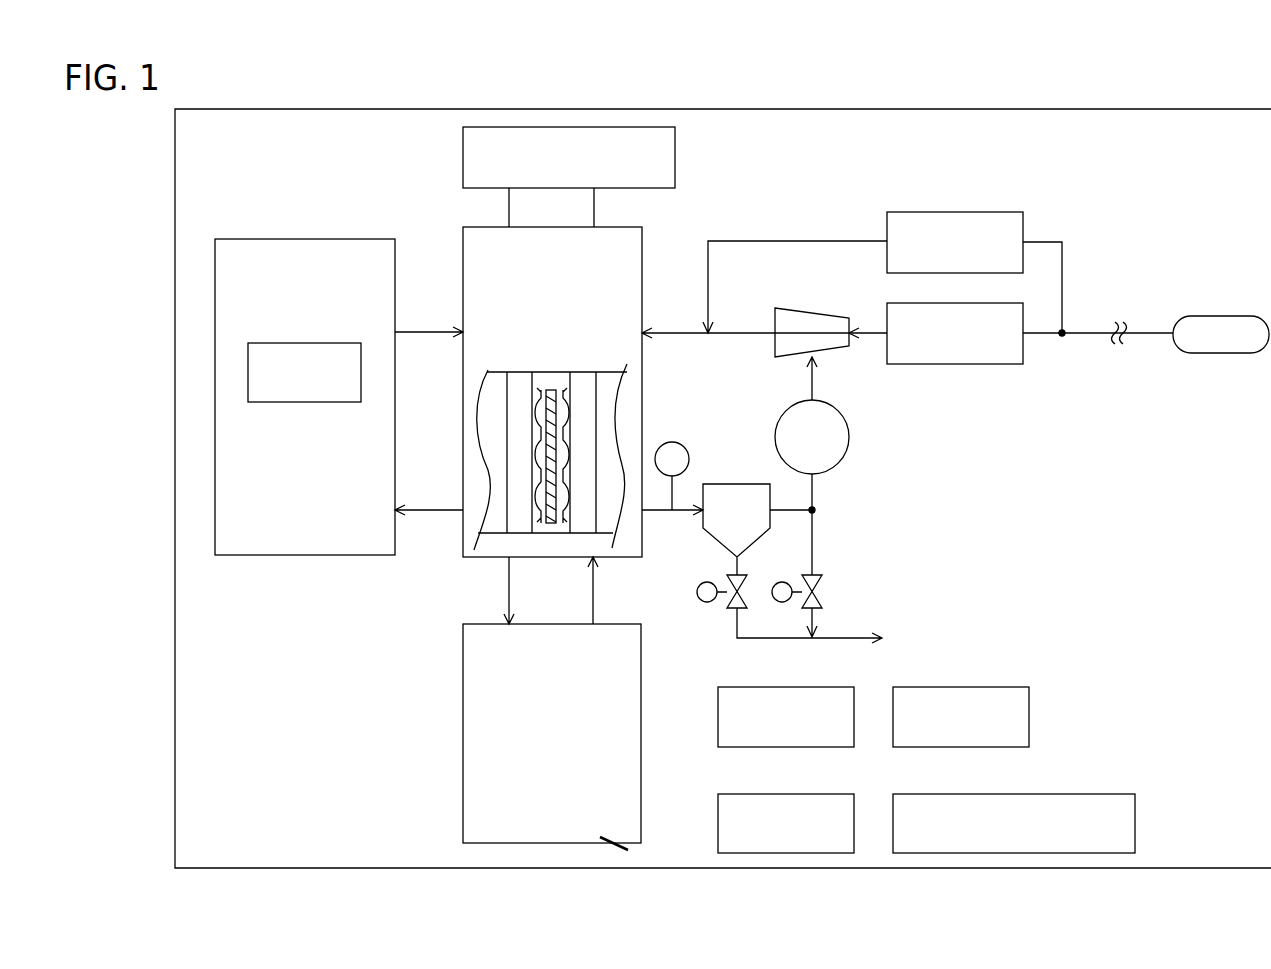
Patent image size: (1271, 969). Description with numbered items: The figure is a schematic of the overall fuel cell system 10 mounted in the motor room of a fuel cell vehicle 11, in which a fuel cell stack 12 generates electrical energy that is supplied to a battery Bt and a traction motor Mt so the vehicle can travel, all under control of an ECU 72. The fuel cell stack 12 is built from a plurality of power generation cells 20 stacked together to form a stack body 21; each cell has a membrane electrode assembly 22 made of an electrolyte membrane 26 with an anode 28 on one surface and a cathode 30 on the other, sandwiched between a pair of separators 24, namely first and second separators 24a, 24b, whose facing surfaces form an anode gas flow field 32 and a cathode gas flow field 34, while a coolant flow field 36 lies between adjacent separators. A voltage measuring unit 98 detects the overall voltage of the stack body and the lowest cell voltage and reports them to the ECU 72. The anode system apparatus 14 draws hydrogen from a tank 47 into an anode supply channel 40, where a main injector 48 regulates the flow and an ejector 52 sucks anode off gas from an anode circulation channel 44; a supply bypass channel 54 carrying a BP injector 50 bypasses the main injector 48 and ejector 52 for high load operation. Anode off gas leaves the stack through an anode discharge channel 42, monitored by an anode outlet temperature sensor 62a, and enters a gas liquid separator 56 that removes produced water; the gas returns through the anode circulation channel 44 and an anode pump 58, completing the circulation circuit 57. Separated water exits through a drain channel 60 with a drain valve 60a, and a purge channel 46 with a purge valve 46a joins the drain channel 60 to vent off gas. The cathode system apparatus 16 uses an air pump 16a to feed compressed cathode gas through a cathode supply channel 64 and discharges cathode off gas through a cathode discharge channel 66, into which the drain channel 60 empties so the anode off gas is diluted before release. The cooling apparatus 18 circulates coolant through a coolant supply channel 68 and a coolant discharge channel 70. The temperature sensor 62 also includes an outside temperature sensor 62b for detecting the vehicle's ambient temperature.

The fuel cell system 10 is at (232, 206).
The fuel cell vehicle 11 is at (328, 106).
The fuel cell stack 12 is at (447, 211).
The anode system apparatus 14 is at (849, 205).
The cathode system apparatus 16 is at (303, 228).
The air pump 16a is at (303, 402).
The cooling apparatus 18 is at (433, 709).
The power generation cell 20 is at (523, 525).
The stack body 21 is at (604, 538).
The membrane electrode assembly 22 is at (596, 326).
The separator 24 is at (545, 442).
The first separator 24a is at (535, 425).
The second separator 24b is at (578, 430).
The electrolyte membrane 26 is at (552, 385).
The anode 28 is at (565, 400).
The cathode 30 is at (522, 398).
The anode gas flow field 32 is at (575, 445).
The cathode gas flow field 34 is at (532, 452).
The coolant flow field 36 is at (542, 470).
The anode supply channel 40 is at (700, 340).
The anode discharge channel 42 is at (655, 514).
The anode circulation channel 44 is at (815, 495).
The purge channel 46 is at (815, 549).
The purge valve 46a is at (823, 592).
The tank 47 is at (1215, 316).
The main injector 48 is at (955, 364).
The BP injector 50 is at (957, 212).
The ejector 52 is at (800, 308).
The supply bypass channel 54 is at (738, 241).
The gas liquid separator 56 is at (748, 484).
The circulation circuit 57 is at (670, 295).
The anode pump 58 is at (850, 437).
The drain channel 60 is at (742, 640).
The drain valve 60a is at (697, 598).
The temperature sensor 62 is at (895, 619).
The anode outlet temperature sensor 62a is at (685, 442).
The outside temperature sensor 62b is at (962, 794).
The cathode supply channel 64 is at (423, 330).
The cathode discharge channel 66 is at (425, 508).
The coolant supply channel 68 is at (596, 604).
The coolant discharge channel 70 is at (508, 590).
The ECU 72 is at (968, 687).
The voltage measuring unit 98 is at (676, 161).
The battery Bt is at (787, 687).
The traction motor Mt is at (777, 794).